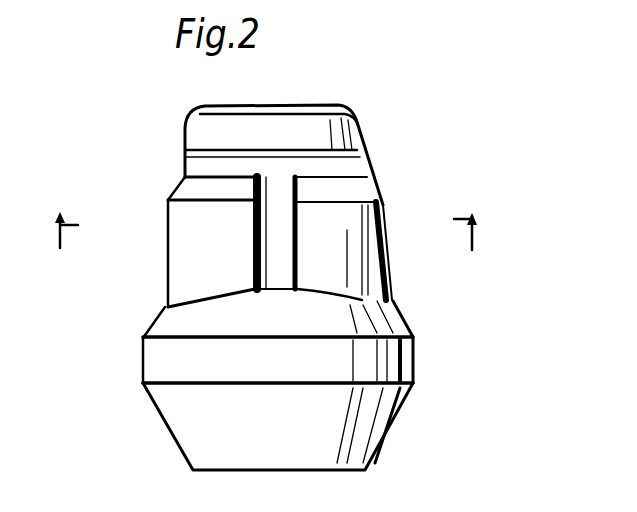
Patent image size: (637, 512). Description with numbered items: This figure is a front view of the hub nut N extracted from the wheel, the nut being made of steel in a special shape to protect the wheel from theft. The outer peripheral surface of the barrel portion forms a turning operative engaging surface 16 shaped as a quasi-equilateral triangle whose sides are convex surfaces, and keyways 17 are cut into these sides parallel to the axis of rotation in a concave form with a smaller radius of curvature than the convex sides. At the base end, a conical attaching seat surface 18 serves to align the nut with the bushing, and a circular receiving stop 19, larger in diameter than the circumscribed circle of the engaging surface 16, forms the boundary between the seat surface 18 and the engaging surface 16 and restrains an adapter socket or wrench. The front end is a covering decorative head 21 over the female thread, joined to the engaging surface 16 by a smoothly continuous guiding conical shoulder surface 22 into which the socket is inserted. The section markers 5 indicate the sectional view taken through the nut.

The hub nut N is at (388, 188).
The turning operative engaging surface 16 is at (186, 226).
The keyways 17 is at (292, 242).
The attaching seat surface 18 is at (182, 413).
The receiving stop 19 is at (157, 352).
The covering decorative head 21 is at (290, 124).
The guiding conical shoulder surface 22 is at (176, 190).
The section line 5- 5 is at (267, 237).